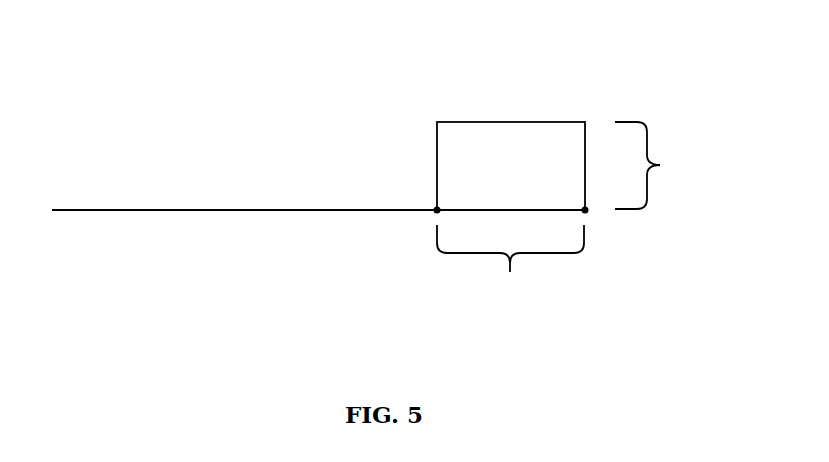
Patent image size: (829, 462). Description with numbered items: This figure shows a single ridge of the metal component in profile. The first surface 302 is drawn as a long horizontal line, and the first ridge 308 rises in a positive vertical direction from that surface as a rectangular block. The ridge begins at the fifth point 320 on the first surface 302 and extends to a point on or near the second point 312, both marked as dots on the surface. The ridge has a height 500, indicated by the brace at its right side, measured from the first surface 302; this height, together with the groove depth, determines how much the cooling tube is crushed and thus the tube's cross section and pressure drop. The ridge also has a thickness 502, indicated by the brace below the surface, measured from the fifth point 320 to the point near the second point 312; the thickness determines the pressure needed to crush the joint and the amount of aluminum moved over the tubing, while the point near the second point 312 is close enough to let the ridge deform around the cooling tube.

The first surface 302 is at (110, 210).
The fifth point 320 is at (437, 210).
The first ridge 308 is at (512, 122).
The second point 312 is at (586, 214).
The height 500 is at (670, 165).
The thickness 502 is at (510, 278).